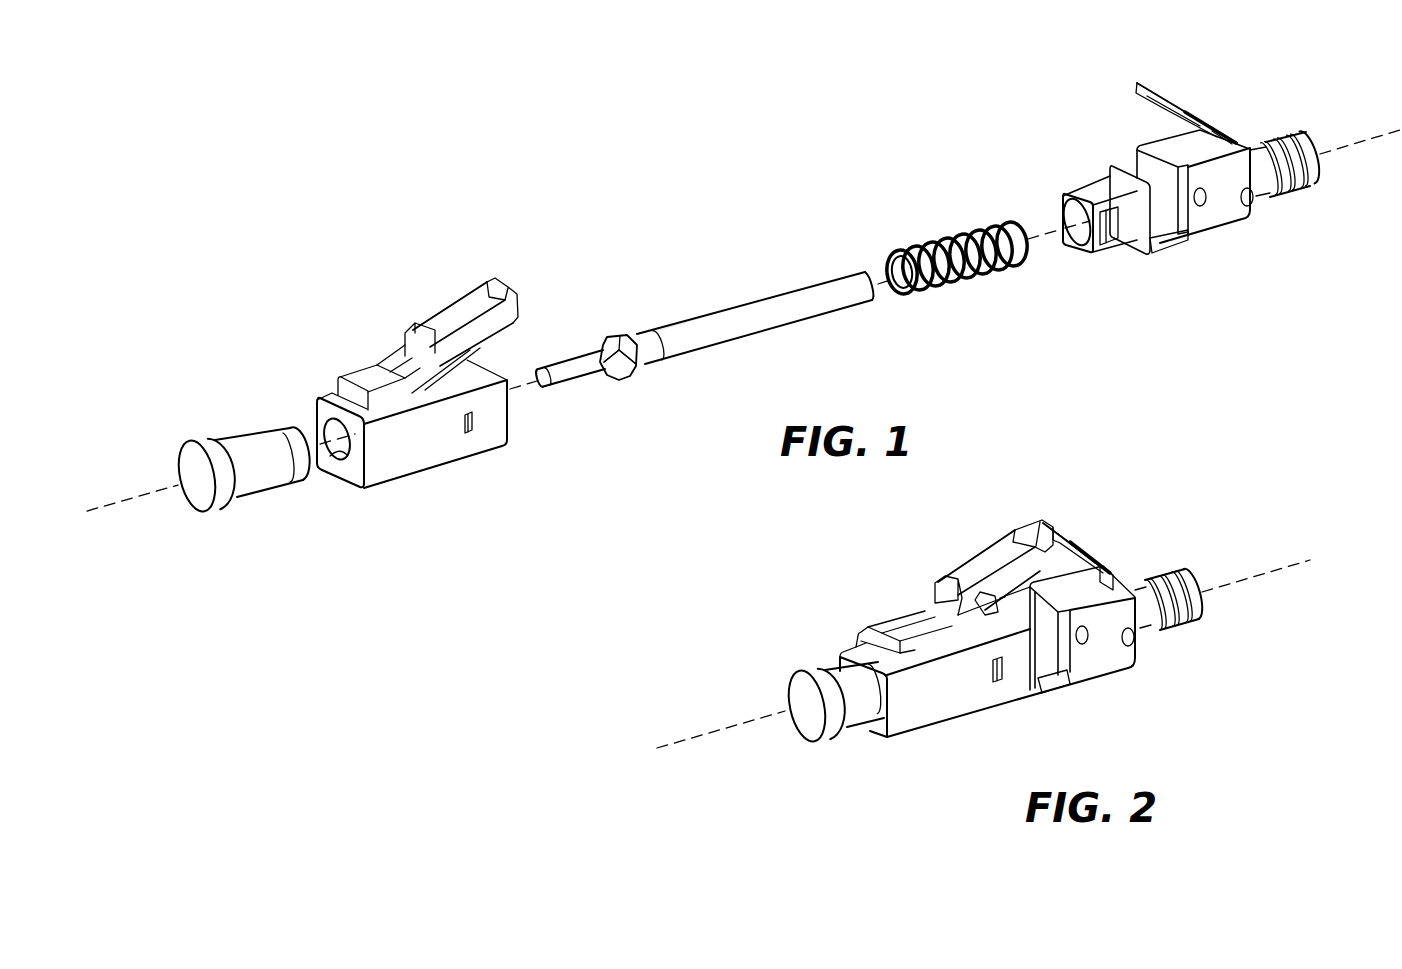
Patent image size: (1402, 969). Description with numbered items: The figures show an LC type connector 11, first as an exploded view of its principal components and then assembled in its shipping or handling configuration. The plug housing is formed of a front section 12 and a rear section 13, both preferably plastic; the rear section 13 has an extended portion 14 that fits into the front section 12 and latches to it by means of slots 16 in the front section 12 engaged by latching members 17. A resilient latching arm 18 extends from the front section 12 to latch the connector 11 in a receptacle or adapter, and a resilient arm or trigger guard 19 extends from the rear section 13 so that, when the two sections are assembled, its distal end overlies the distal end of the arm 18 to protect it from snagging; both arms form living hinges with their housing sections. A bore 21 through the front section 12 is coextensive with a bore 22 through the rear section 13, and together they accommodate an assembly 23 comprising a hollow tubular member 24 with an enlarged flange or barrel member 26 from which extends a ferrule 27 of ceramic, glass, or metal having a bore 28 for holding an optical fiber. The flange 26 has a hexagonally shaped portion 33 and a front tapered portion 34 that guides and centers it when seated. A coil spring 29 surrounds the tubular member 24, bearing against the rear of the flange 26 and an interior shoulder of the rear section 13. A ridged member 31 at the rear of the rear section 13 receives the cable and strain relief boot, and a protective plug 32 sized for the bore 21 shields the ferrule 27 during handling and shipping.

In FIG. 1, the LC type connector 11 is at (705, 224).
In FIG. 1, the front section 12 is at (414, 405).
In FIG. 2, the front section 12 is at (946, 650).
In FIG. 1, the rear section 13 is at (1161, 168).
In FIG. 2, the rear section 13 is at (1116, 601).
In FIG. 1, the extended portion 14 is at (1076, 219).
In FIG. 1, the slots 16 is at (478, 418).
In FIG. 2, the slots 16 is at (1005, 680).
In FIG. 1, the latching members 17 is at (1110, 232).
In FIG. 1, the resilient latching arm 18 is at (447, 330).
In FIG. 2, the resilient latching arm 18 is at (978, 565).
In FIG. 1, the resilient arm or trigger guard 19 is at (1177, 85).
In FIG. 2, the resilient arm or trigger guard 19 is at (1072, 536).
In FIG. 1, the bore 21 is at (337, 458).
In FIG. 1, the bore 22 is at (1068, 226).
In FIG. 1, the assembly 23 is at (755, 315).
In FIG. 1, the hollow tubular member 24 is at (797, 299).
In FIG. 1, the flange or barrel member 26 is at (653, 358).
In FIG. 1, the ferrule 27 is at (570, 381).
In FIG. 1, the bore 28 is at (539, 392).
In FIG. 1, the coil spring 29 is at (945, 238).
In FIG. 1, the ridged member 31 is at (1270, 132).
In FIG. 2, the ridged member 31 is at (1168, 599).
In FIG. 1, the protective plug 32 is at (192, 462).
In FIG. 2, the protective plug 32 is at (800, 694).
In FIG. 1, the hexagonally shaped portion 33 is at (636, 374).
In FIG. 1, the front tapered portion 34 is at (607, 382).